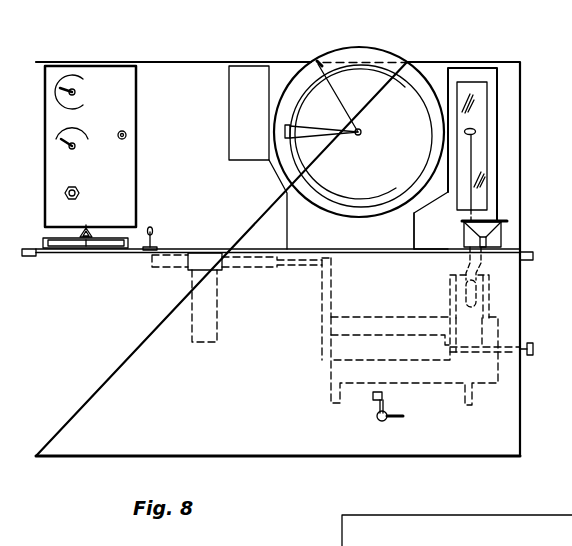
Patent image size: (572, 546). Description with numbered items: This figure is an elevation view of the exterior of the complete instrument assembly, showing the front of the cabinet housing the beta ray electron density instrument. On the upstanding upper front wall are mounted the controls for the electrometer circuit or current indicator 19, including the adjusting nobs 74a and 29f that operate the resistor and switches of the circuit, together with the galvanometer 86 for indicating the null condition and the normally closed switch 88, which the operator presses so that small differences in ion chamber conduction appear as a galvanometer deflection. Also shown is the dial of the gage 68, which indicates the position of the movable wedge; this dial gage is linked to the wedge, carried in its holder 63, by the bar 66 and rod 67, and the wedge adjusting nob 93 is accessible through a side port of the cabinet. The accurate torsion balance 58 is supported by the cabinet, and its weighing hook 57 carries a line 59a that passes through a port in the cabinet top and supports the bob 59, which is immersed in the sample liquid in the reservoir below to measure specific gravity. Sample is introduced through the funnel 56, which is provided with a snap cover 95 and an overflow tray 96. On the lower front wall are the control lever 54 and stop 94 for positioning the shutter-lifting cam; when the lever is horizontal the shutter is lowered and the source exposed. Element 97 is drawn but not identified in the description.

The current indicator 19 is at (115, 80).
The adjusting nob 74a is at (75, 92).
The adjusting nob 29f is at (75, 148).
The galvanometer 86 is at (128, 238).
The normally closed switch 88 is at (153, 237).
The dial gage 68 is at (205, 254).
The rod 67 is at (303, 268).
The bar 66 is at (331, 276).
The torsion balance 58 is at (296, 216).
The overflow tray 96 is at (432, 248).
The weighing hook 57 is at (477, 132).
The line 59a is at (471, 170).
The snap cover 95 is at (503, 220).
The funnel 56 is at (505, 238).
The bob 59 is at (466, 297).
The wedge adjusting nob 93 is at (532, 342).
The conduit 97 is at (513, 352).
The holder 63 is at (342, 350).
The stop 94 is at (372, 395).
The control lever 54 is at (403, 417).